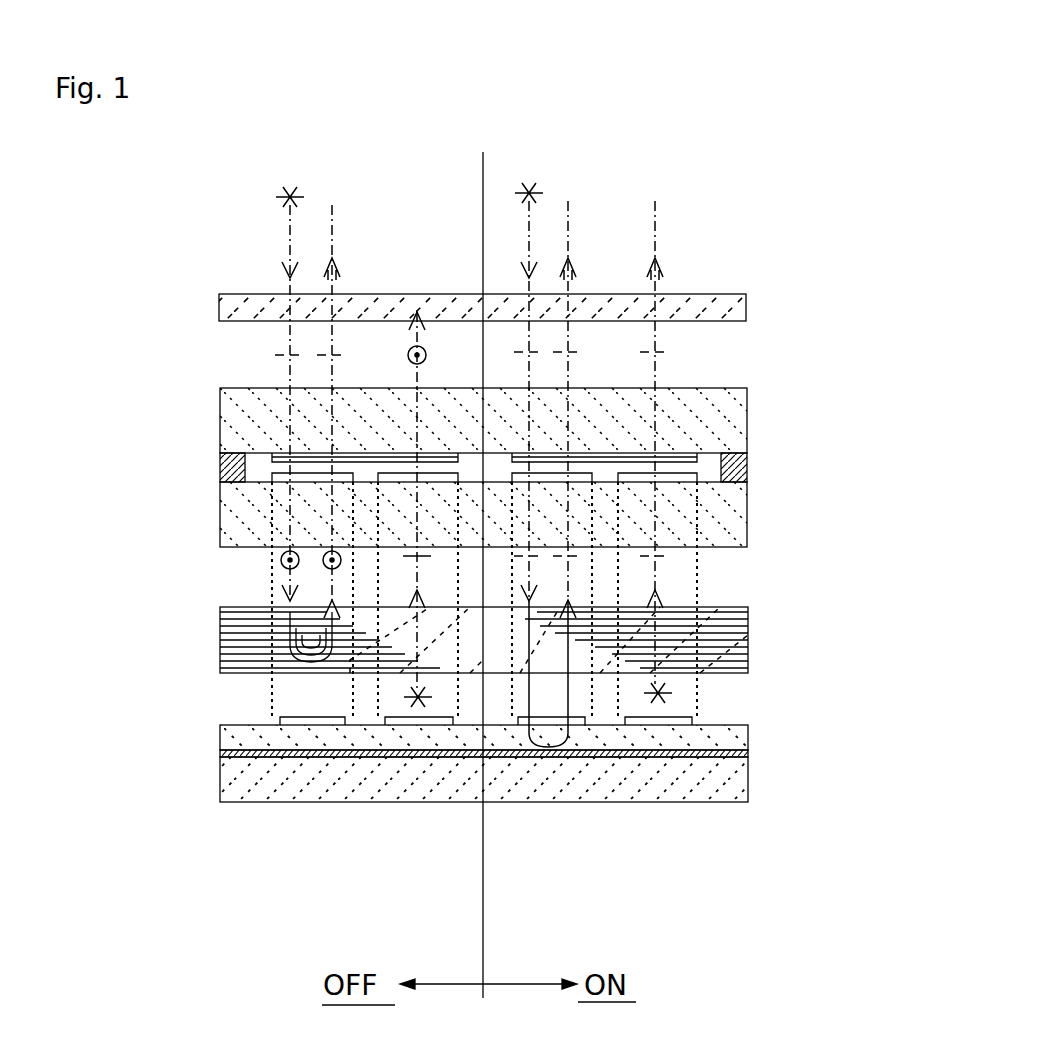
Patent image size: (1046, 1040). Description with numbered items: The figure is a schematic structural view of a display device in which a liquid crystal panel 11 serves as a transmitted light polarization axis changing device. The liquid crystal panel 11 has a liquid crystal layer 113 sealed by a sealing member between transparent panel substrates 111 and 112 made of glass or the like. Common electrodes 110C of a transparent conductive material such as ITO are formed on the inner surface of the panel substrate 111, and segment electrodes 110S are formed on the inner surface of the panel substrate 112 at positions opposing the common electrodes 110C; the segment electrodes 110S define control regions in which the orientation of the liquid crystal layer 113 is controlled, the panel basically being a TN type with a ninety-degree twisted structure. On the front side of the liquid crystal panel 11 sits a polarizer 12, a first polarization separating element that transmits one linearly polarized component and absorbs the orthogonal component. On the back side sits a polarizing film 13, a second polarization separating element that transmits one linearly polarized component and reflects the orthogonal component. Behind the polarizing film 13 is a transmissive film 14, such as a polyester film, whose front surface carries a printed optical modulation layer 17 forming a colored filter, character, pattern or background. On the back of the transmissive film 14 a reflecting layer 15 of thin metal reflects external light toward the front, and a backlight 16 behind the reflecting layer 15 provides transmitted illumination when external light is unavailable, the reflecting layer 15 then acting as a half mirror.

The liquid crystal panel 11 is at (506, 465).
The polarizer 12 is at (746, 303).
The polarizing film 13 is at (748, 628).
The transmissive film 14 is at (220, 738).
The reflecting layer 15 is at (220, 753).
The backlight 16 is at (248, 802).
The optical modulation layer 17 is at (672, 716).
The common electrodes 110C is at (283, 452).
The segment electrodes 110S is at (315, 487).
The panel substrate 111 is at (747, 385).
The panel substrate 112 is at (747, 500).
The liquid crystal layer 113 is at (747, 462).